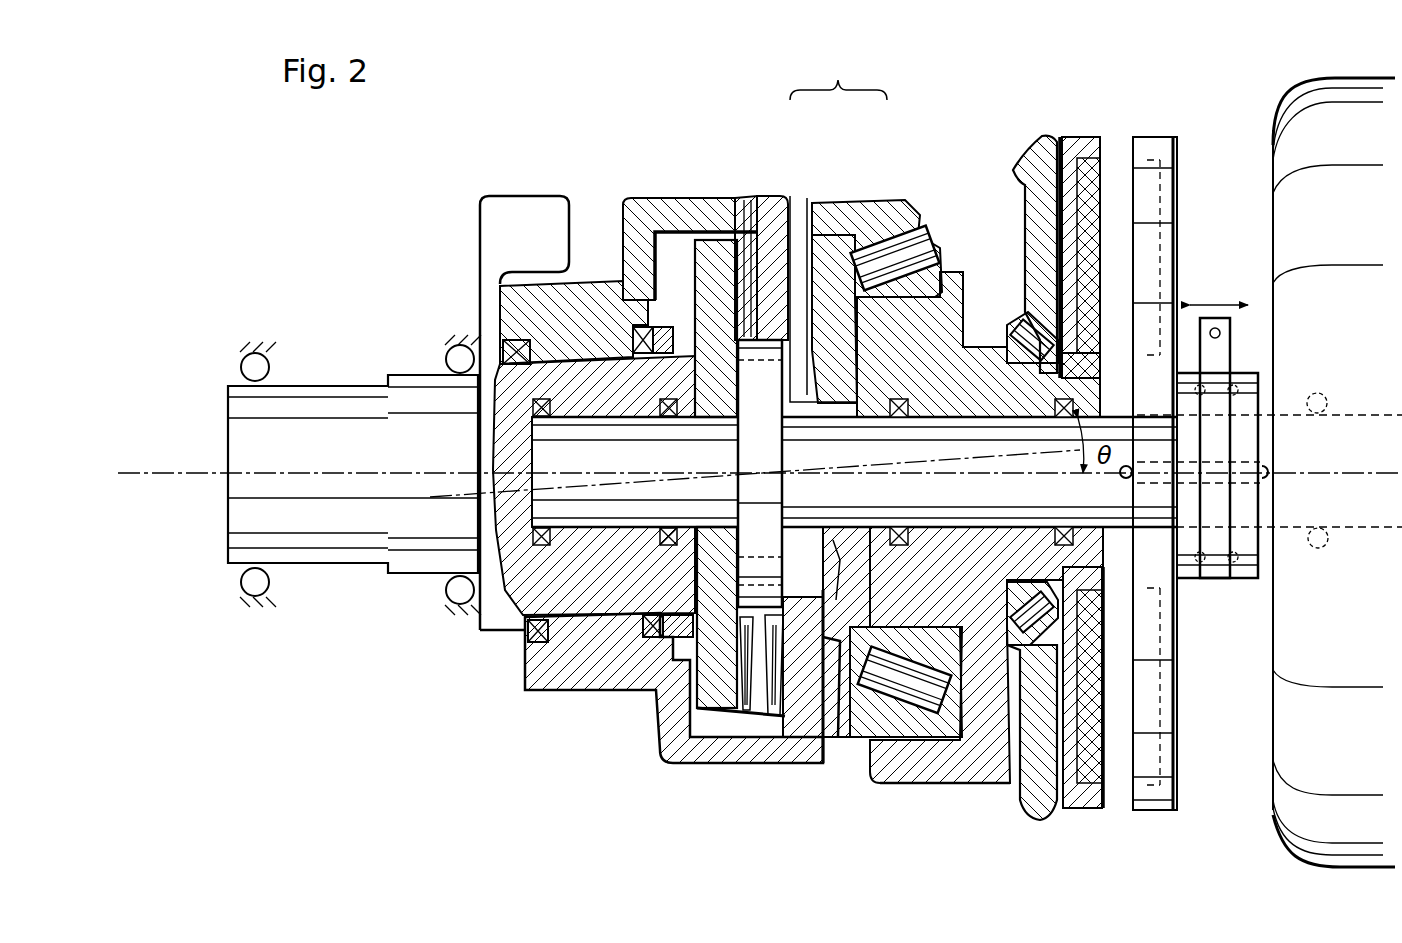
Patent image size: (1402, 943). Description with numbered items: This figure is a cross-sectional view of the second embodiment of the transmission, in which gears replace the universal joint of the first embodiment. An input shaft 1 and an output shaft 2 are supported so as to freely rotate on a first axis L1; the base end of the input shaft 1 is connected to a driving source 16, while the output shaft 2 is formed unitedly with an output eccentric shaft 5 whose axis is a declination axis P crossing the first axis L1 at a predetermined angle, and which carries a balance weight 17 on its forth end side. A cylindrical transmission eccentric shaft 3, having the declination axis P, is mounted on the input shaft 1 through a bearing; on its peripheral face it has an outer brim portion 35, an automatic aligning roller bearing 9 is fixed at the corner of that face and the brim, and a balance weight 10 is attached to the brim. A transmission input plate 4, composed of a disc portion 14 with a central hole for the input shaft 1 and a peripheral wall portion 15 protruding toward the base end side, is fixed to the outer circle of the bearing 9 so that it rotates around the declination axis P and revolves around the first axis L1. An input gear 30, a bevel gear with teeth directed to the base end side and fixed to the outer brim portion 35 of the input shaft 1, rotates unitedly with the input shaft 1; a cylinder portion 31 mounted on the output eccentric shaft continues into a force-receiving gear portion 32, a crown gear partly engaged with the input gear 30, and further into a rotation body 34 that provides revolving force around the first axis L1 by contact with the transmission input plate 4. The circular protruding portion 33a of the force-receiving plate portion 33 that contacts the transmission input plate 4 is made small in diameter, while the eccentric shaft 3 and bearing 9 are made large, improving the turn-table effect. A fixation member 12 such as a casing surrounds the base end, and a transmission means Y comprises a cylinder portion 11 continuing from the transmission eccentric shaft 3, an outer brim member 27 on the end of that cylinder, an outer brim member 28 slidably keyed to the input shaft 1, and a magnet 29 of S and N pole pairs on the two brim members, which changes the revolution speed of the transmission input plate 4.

The input shaft 1 is at (994, 410).
The output shaft 2 is at (332, 382).
The transmission eccentric shaft 3 is at (905, 285).
The transmission input plate 4 is at (838, 73).
The output eccentric shaft 5 is at (585, 624).
The automatic aligning roller bearing 9 is at (920, 674).
The balance weight 10 is at (940, 772).
The cylinder portion 11 is at (1028, 322).
The fixation member 12 is at (1018, 802).
The disc portion 14 is at (808, 255).
The peripheral wall portion 15 is at (868, 200).
The driving source 16 is at (1266, 800).
The balance weight 17 is at (527, 205).
The outer brim member 27 is at (1082, 808).
The outer brim member 28 is at (1150, 812).
The magnet 29 is at (1110, 640).
The input gear 30 is at (730, 712).
The cylinder portion 31 is at (613, 695).
The force-receiving gear portion 32 is at (775, 722).
The force-receiving plate portion 33 is at (857, 545).
The circular protruding portion 33a is at (836, 600).
The rotation body 34 is at (699, 193).
The outer brim portion 35 is at (742, 212).
The declination axis P is at (452, 497).
The first axis L1 is at (312, 470).
The transmission means Y is at (1198, 118).